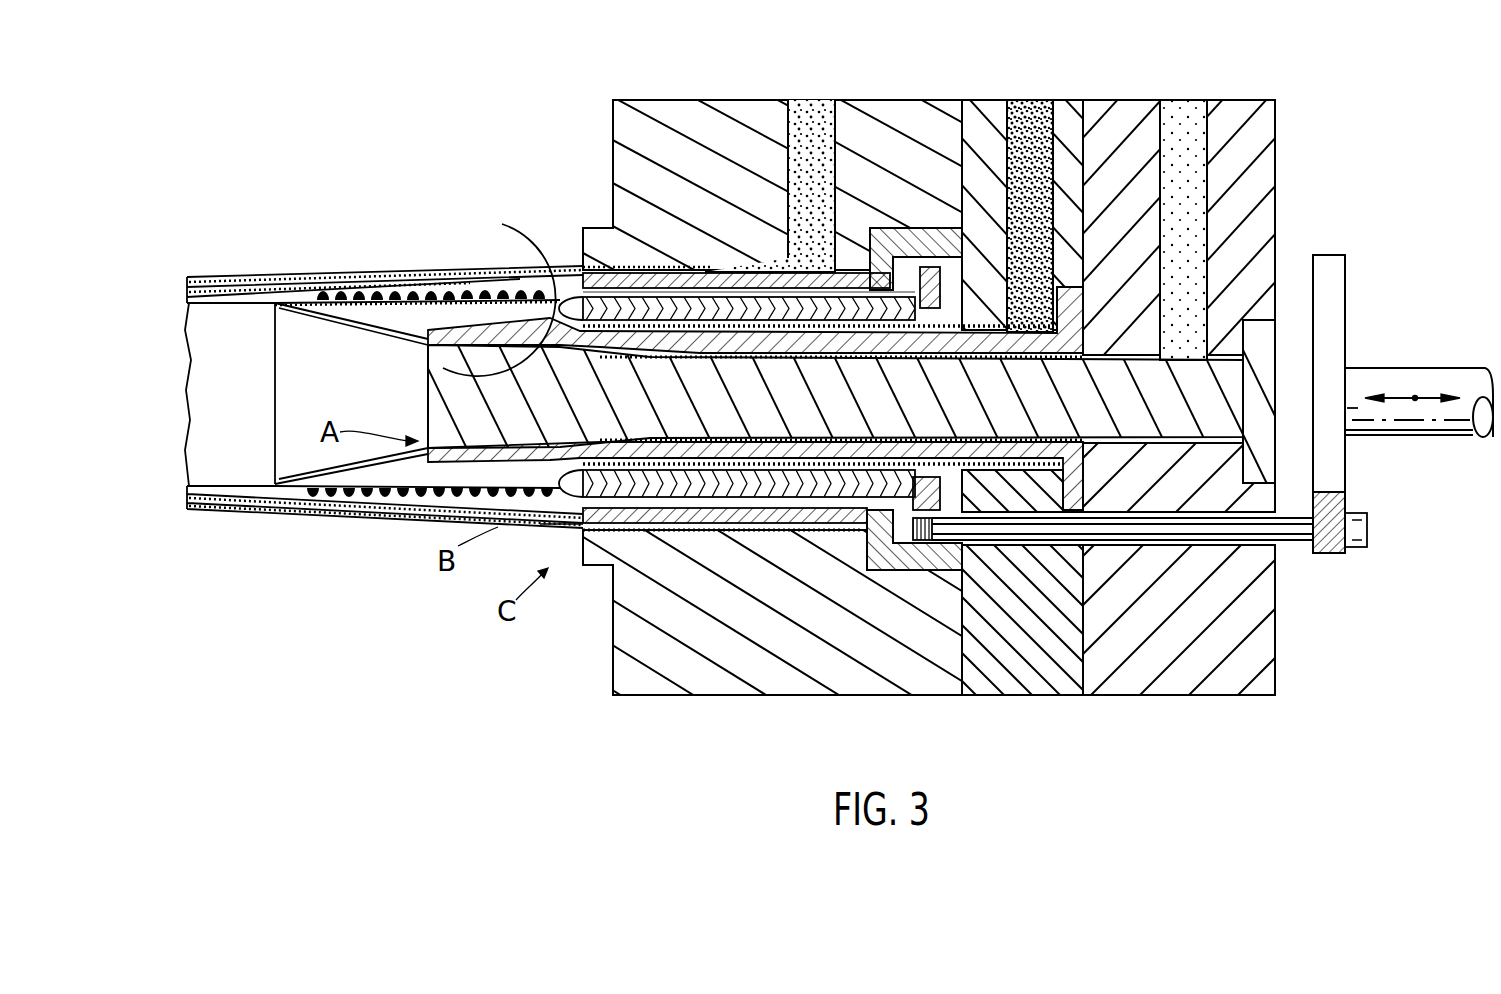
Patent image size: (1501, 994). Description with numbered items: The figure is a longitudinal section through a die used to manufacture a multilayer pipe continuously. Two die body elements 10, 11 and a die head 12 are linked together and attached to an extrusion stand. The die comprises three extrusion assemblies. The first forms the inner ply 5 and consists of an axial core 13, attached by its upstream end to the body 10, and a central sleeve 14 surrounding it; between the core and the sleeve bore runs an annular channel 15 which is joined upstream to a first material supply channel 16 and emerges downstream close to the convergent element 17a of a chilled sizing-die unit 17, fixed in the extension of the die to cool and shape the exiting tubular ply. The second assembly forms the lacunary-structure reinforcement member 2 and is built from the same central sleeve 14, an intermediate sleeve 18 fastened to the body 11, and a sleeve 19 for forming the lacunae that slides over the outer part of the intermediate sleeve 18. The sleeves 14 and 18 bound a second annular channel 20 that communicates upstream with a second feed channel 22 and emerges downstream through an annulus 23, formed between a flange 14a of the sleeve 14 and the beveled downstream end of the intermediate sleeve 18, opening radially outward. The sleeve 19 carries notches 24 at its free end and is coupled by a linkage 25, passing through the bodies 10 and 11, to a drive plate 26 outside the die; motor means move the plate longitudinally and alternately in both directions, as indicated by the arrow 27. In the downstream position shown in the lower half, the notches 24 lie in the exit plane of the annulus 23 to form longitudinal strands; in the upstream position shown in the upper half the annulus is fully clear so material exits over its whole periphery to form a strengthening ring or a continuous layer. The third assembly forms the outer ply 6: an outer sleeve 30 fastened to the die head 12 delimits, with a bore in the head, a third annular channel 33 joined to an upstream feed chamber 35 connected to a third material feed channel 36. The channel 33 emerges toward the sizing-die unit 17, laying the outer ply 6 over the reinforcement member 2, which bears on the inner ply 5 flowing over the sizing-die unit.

The lacunary-structure reinforcement member 2 is at (365, 276).
The inner ply 5 is at (312, 313).
The outer ply 6 is at (226, 278).
The die body element 10 is at (1225, 685).
The die body element 11 is at (1028, 685).
The die head 12 is at (778, 676).
The axial core 13 is at (447, 412).
The central sleeve 14 is at (440, 508).
The flange 14a is at (542, 268).
The annular channel 15 is at (428, 362).
The first material supply channel 16 is at (1185, 232).
The chilled sizing-die unit 17 is at (226, 405).
The convergent element 17a is at (312, 500).
The intermediate sleeve 18 is at (576, 250).
The sleeve for forming the lacunae 19 is at (662, 290).
The second annular channel 20 is at (753, 328).
The second feed channel 22 is at (1038, 112).
The annulus 23 is at (552, 270).
The notches 24 is at (576, 293).
The linkage 25 is at (1305, 535).
The drive plate 26 is at (1340, 300).
The arrow 27 is at (1415, 396).
The outer sleeve 30 is at (556, 526).
The third annular channel 33 is at (636, 530).
The upstream feed chamber 35 is at (757, 268).
The third material feed channel 36 is at (820, 108).